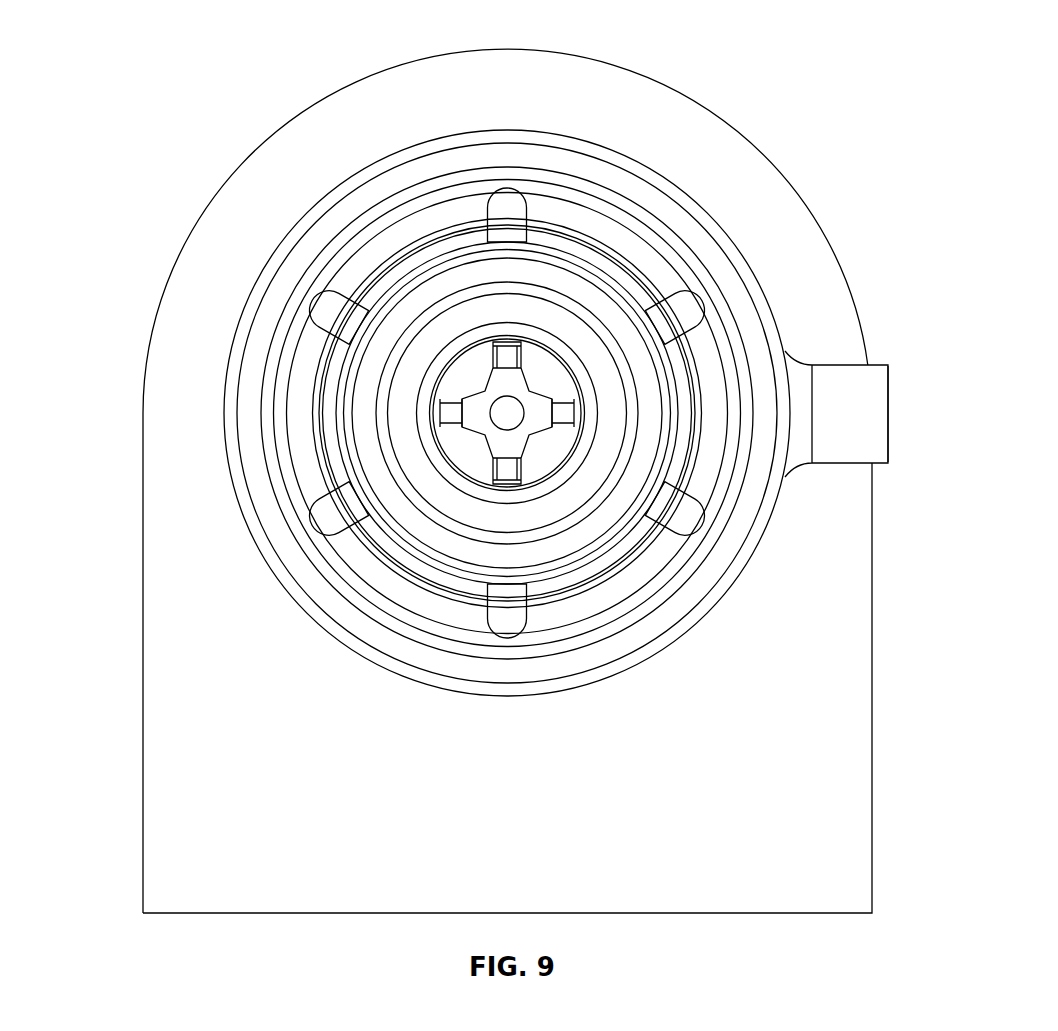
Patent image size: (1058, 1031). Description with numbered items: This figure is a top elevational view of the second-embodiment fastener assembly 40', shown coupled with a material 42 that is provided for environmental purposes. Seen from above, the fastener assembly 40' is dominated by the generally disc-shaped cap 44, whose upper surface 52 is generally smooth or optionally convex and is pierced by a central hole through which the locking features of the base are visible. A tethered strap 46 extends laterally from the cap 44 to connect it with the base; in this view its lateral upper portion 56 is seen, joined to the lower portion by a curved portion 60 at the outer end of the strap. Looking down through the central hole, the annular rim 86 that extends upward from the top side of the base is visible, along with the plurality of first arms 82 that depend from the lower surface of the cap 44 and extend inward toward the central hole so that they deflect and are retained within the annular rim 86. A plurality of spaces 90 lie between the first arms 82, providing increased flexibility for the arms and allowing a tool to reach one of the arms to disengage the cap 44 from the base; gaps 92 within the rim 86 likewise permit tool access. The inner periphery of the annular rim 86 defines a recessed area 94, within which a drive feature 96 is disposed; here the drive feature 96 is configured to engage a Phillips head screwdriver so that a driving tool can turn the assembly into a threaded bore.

The fastener assembly 40' is at (84, 64).
The material 42 is at (177, 735).
The cap 44 is at (307, 569).
The strap 46 is at (863, 420).
The upper surface 52 is at (330, 612).
The upper portion 56 is at (828, 377).
The curved portion 60 is at (888, 430).
The first arms 82 is at (563, 247).
The annular rim 86 is at (620, 307).
The spaces 90 is at (477, 212).
The gaps 92 is at (593, 267).
The recessed area 94 is at (377, 407).
The drive feature 96 is at (463, 370).